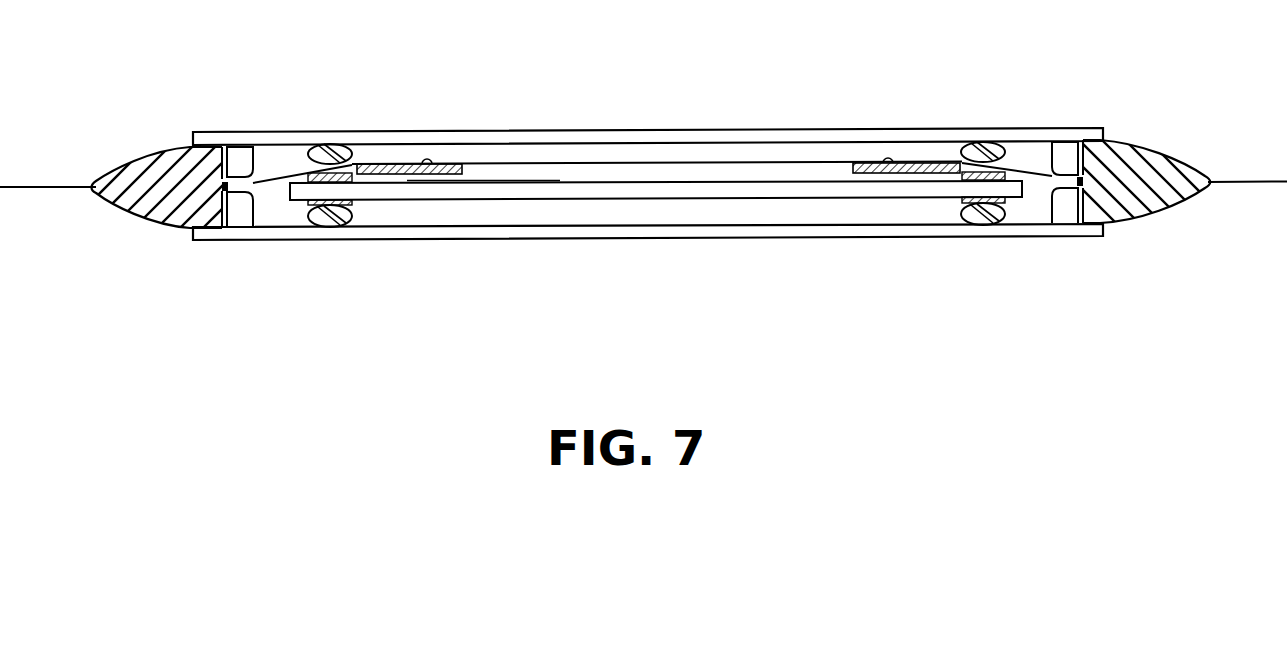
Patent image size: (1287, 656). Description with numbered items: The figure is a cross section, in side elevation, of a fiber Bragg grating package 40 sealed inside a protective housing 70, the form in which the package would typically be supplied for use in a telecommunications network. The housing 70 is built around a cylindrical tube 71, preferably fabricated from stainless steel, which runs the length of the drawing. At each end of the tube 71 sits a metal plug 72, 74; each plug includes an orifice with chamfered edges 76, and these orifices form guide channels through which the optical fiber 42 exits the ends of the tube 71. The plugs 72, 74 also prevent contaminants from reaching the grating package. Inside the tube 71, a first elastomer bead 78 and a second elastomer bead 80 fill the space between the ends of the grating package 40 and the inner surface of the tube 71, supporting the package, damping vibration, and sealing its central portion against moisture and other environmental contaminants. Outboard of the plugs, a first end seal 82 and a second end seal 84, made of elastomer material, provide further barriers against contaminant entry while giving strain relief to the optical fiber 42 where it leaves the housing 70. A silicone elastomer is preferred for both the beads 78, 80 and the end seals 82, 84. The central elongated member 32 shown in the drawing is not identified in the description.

The protective housing 70 is at (693, 100).
The cylindrical tube 71 is at (883, 127).
The fiber Bragg grating package 40 is at (537, 155).
The central bar 32 is at (653, 193).
The optical fiber 42 is at (1238, 180).
The second end seal 84 is at (182, 163).
The first end seal 82 is at (1152, 207).
The metal plug 74 is at (238, 217).
The metal plug 72 is at (1065, 218).
The second elastomer bead 80 is at (330, 220).
The first elastomer bead 78 is at (983, 214).
The chamfered edges 76 is at (1057, 175).